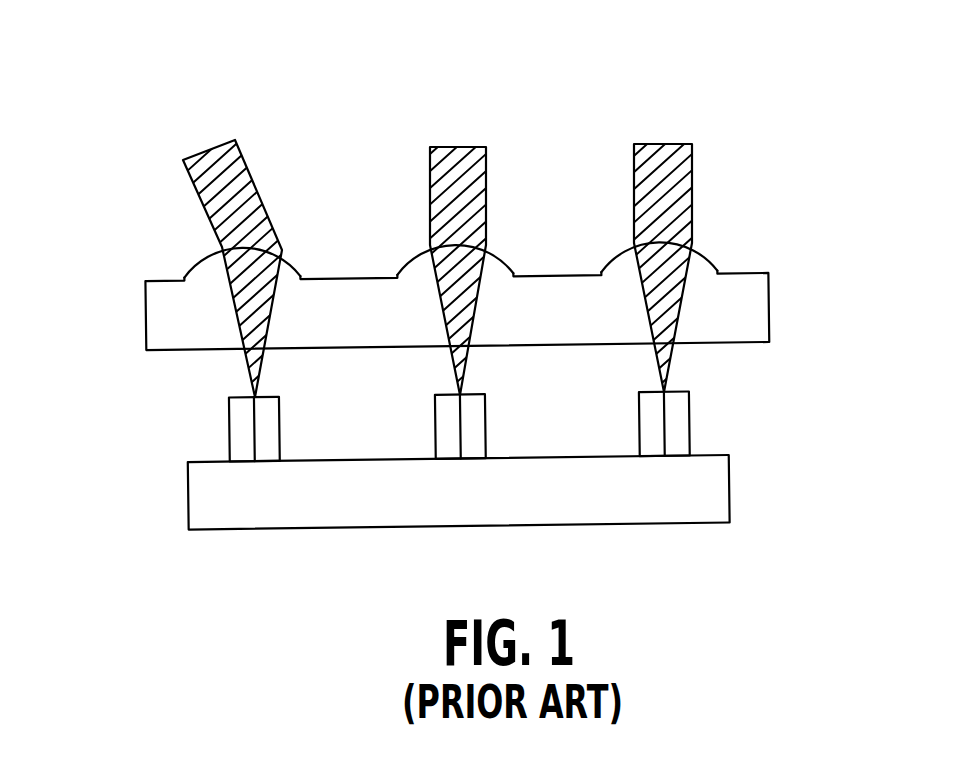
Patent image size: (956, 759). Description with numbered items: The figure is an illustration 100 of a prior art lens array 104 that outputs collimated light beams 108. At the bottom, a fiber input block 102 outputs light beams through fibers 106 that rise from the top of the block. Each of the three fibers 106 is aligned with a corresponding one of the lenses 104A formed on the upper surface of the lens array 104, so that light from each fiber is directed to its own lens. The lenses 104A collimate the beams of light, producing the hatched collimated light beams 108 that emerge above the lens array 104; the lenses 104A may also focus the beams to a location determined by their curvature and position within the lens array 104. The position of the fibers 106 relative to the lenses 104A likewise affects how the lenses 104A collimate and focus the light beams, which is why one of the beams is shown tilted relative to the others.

The illustration 100 is at (758, 69).
The fiber input block 102 is at (715, 483).
The lens array 104 is at (827, 299).
The lenses 104A is at (198, 258).
The fibers 106 is at (683, 442).
The collimated light beams 108 is at (653, 140).